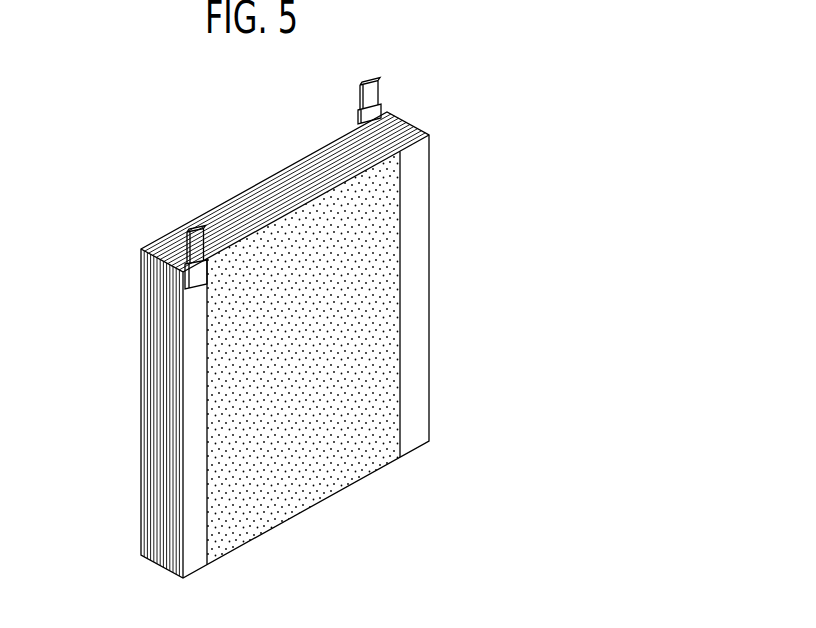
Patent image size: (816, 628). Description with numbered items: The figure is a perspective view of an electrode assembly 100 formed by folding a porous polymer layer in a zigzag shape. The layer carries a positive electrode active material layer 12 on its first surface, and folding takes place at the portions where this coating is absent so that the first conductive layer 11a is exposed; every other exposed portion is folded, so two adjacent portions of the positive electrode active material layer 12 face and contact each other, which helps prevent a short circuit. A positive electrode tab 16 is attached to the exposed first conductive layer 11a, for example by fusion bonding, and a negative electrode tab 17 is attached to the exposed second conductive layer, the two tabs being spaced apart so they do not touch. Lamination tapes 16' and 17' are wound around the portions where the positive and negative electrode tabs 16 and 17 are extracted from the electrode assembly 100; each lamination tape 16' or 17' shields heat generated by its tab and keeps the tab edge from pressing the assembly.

The electrode assembly 100 is at (331, 323).
The first conductive layer 11a is at (415, 422).
The positive electrode active material layer 12 is at (377, 272).
The positive electrode tab 16 is at (402, 94).
The lamination tape 16' is at (336, 96).
The negative electrode tab 17 is at (163, 211).
The lamination tape 17' is at (147, 274).